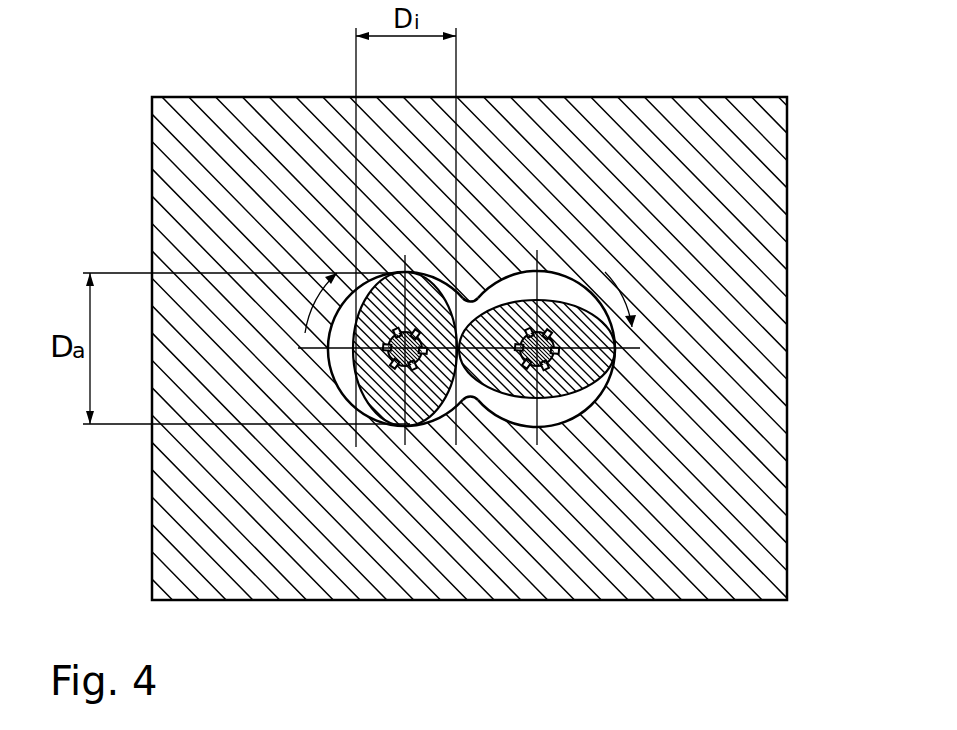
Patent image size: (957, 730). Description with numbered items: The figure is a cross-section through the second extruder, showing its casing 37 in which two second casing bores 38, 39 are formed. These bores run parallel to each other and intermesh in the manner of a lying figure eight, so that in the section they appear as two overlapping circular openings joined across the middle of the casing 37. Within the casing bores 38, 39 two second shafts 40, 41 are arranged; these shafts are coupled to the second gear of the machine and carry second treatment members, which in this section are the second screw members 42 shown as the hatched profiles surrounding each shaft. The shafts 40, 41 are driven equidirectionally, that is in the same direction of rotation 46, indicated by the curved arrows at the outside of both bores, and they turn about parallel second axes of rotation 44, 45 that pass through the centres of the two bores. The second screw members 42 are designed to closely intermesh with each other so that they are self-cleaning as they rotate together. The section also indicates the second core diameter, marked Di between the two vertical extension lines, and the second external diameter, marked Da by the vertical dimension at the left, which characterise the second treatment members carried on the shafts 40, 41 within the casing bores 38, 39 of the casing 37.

The casing 37 is at (623, 93).
The second casing bore 38 is at (545, 278).
The second casing bore 39 is at (335, 370).
The second shaft 40 is at (563, 346).
The second shaft 41 is at (403, 365).
The second screw member 42 is at (530, 300).
The second axis of rotation 44 is at (600, 386).
The second axis of rotation 45 is at (416, 375).
The direction of rotation 46 is at (308, 308).